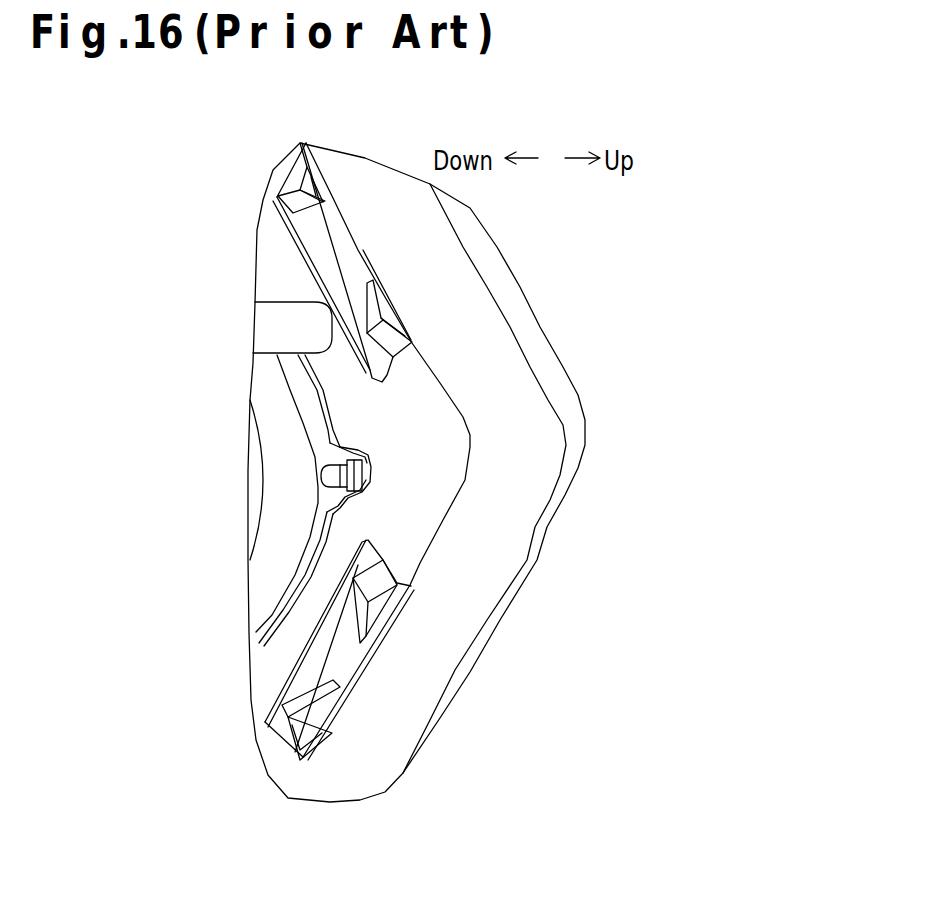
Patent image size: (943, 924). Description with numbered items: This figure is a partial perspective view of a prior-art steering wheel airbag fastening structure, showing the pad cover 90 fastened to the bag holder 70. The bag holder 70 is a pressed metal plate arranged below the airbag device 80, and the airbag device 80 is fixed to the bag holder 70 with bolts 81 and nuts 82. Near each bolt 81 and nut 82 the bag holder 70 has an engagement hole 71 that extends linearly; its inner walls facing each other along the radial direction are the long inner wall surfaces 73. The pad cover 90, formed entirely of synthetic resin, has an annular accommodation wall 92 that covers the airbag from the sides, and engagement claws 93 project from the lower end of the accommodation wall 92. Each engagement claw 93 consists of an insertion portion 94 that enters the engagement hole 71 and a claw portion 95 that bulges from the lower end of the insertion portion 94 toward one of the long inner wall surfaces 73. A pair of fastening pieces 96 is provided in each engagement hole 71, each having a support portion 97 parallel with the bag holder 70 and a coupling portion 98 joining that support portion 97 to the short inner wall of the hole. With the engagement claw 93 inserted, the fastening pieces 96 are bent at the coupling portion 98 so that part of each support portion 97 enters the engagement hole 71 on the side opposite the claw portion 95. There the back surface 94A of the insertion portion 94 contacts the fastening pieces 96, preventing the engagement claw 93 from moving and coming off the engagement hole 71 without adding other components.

The bag holder 70 is at (556, 446).
The engagement hole 71 is at (382, 450).
The long inner wall surface 73 is at (388, 245).
The airbag device 80 is at (248, 470).
The bolt 81 is at (337, 449).
The nut 82 is at (364, 470).
The pad cover 90 is at (555, 478).
The accommodation wall 92 is at (705, 405).
The engagement claw 93 is at (239, 463).
The insertion portion 94 is at (272, 451).
The back surface 94A is at (322, 255).
The claw portion 95 is at (278, 197).
The fastening piece 96 is at (380, 468).
The support portion 97 is at (323, 207).
The coupling portion 98 is at (373, 105).